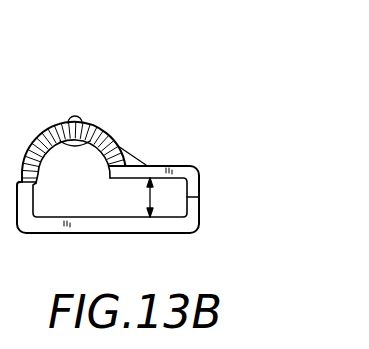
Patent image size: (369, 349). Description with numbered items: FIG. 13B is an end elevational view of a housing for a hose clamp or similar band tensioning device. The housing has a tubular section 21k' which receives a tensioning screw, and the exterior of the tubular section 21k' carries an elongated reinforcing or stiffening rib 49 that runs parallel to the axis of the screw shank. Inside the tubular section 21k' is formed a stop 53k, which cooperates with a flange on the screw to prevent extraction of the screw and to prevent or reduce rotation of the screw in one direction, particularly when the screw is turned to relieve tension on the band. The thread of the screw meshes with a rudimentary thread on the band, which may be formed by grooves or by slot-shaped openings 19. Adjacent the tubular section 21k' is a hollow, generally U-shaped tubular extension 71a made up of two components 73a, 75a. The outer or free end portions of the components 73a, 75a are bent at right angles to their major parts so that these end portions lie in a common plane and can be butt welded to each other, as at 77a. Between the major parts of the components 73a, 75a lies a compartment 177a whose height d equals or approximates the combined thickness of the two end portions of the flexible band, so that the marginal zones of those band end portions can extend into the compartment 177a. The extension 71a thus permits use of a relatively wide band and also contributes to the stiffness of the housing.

The reinforcing rib 49 is at (76, 117).
The tubular section 21k' is at (90, 135).
The slot-shaped opening 19 is at (124, 149).
The component of the extension 73a is at (176, 170).
The hollow tubular extension 71a is at (208, 185).
The butt weld 77a is at (200, 198).
The stop 53k is at (77, 147).
The component of the extension 75a is at (57, 227).
The compartment 177a is at (93, 204).
The height of the compartment d is at (148, 196).